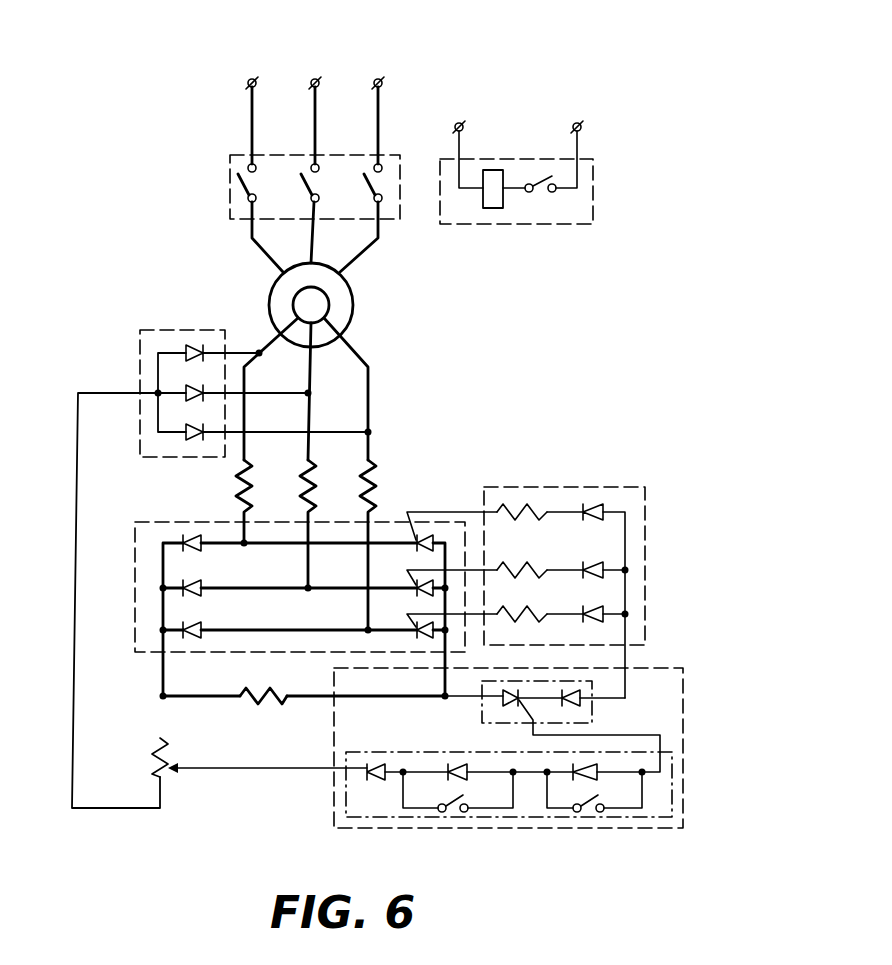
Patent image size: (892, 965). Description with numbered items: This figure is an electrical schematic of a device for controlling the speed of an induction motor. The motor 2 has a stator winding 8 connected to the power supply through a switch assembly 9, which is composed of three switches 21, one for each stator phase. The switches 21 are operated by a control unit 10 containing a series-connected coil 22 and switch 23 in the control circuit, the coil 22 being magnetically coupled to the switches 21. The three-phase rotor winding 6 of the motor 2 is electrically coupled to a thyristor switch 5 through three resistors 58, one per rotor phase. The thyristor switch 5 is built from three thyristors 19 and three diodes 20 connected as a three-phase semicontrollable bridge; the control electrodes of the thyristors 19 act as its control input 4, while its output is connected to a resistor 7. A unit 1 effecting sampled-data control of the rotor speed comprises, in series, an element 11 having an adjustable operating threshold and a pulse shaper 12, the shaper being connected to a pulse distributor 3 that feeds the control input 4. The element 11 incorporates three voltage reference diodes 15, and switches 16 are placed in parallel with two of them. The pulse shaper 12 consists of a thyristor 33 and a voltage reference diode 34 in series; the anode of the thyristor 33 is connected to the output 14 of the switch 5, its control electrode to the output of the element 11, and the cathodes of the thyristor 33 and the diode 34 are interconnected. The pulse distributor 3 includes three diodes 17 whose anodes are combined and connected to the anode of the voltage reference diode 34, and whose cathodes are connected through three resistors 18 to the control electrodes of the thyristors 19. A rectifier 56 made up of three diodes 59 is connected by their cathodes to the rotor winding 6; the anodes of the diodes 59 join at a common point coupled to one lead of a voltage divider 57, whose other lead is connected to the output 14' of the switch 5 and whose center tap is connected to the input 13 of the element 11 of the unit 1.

The unit effecting sampled-data control 1 is at (685, 699).
The motor 2 is at (366, 288).
The pulse distributor 3 is at (646, 529).
The control input 4 is at (414, 538).
The thyristor switch 5 is at (152, 523).
The rotor winding 6 is at (330, 306).
The resistor 7 is at (258, 702).
The stator winding 8 is at (345, 326).
The switch assembly 9 is at (229, 199).
The control unit 10 is at (439, 194).
The element having an adjustable operating threshold 11 is at (570, 822).
The pulse shaper 12 is at (481, 712).
The input 13 is at (346, 772).
The output 14 is at (333, 686).
The output 14' is at (143, 716).
The voltage reference diodes 15 is at (381, 766).
The switches 16 is at (452, 813).
The diodes 17 is at (592, 506).
The resistors 18 is at (521, 506).
The thyristors 19 is at (428, 538).
The diodes 20 is at (190, 536).
The switches 21 is at (304, 184).
The coil 22 is at (494, 170).
The switch 23 is at (544, 184).
The thyristor 33 is at (508, 704).
The voltage reference diode 34 is at (585, 700).
The rectifier 56 is at (148, 262).
The voltage divider 57 is at (155, 766).
The resistors 58 is at (378, 473).
The diodes 59 is at (195, 345).